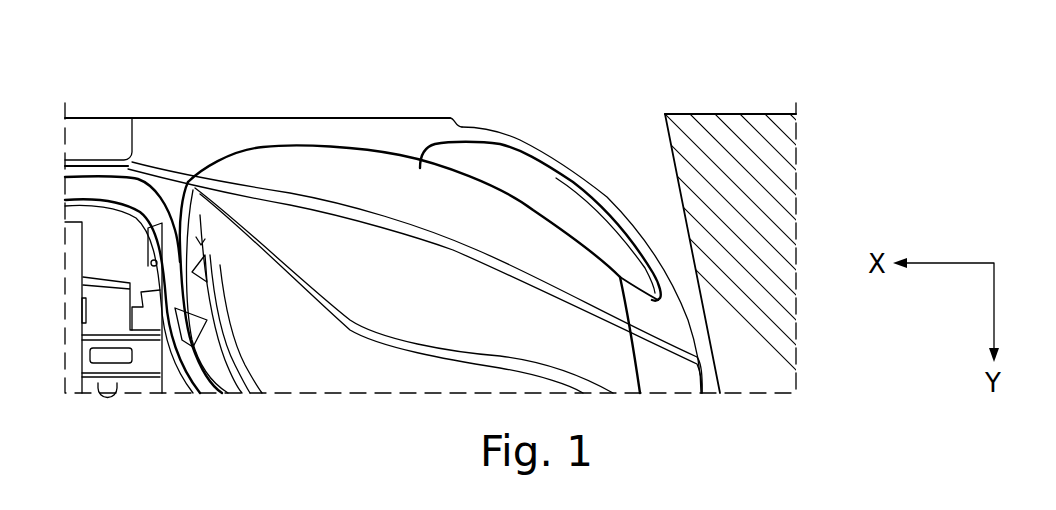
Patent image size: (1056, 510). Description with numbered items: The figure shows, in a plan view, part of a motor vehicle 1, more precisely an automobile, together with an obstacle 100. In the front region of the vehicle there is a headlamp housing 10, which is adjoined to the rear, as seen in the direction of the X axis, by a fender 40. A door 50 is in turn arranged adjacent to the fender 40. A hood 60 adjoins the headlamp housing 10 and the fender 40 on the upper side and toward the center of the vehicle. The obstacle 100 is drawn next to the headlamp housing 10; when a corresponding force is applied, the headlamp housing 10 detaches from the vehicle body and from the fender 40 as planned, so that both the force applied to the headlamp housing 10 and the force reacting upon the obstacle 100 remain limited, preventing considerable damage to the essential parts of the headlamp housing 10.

The motor vehicle 1 is at (440, 90).
The headlamp housing 10 is at (520, 172).
The fender 40 is at (245, 133).
The door 50 is at (97, 132).
The hood 60 is at (455, 310).
The obstacle 100 is at (763, 253).